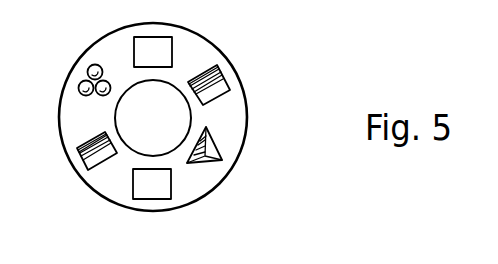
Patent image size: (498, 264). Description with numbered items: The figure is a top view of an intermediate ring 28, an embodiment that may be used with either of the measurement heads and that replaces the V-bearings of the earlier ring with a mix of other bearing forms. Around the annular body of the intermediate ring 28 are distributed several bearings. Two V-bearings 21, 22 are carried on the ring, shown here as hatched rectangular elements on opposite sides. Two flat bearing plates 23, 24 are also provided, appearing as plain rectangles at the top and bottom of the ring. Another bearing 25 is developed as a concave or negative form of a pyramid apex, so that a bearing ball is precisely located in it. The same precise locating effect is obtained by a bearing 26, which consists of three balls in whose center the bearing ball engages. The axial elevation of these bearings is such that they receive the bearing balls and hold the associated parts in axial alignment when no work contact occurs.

The V-bearing 21 is at (96, 161).
The V-bearing 22 is at (216, 88).
The flat bearing plate 23 is at (167, 45).
The flat bearing plate 24 is at (147, 181).
The bearing 25 is at (210, 165).
The bearing 26 is at (89, 71).
The intermediate ring 28 is at (203, 50).